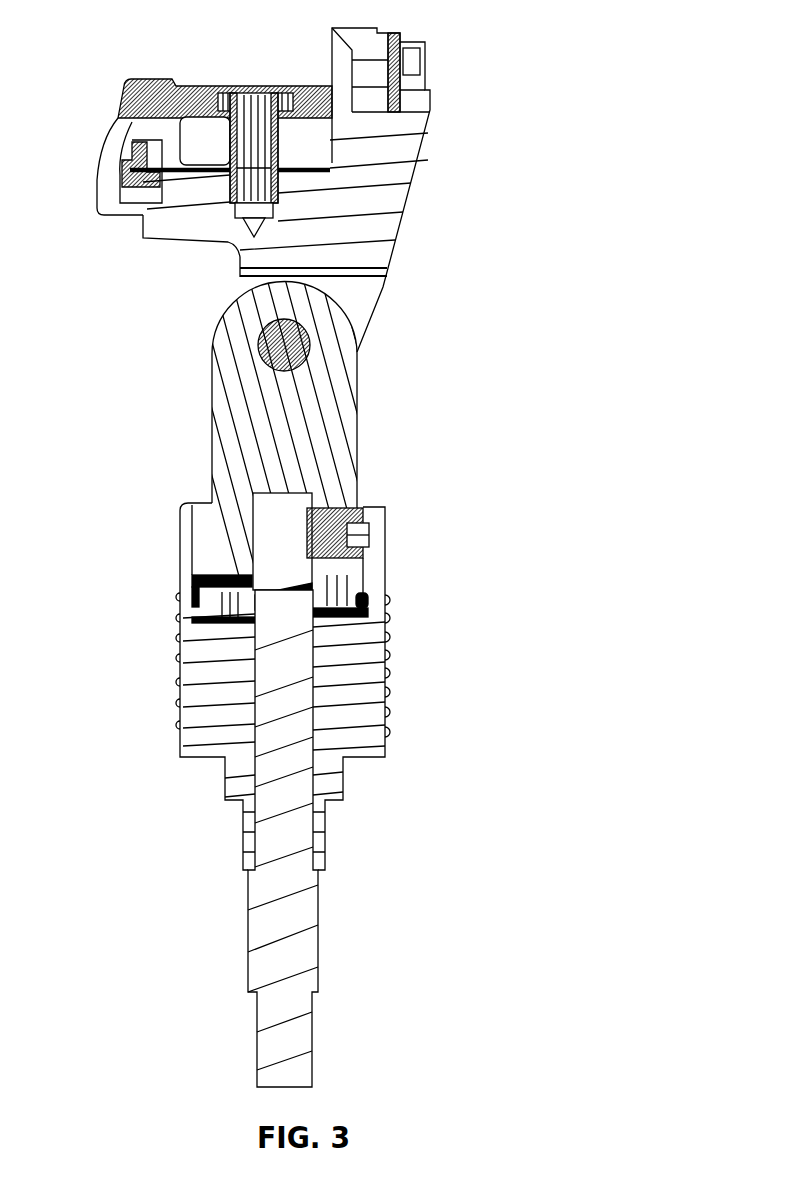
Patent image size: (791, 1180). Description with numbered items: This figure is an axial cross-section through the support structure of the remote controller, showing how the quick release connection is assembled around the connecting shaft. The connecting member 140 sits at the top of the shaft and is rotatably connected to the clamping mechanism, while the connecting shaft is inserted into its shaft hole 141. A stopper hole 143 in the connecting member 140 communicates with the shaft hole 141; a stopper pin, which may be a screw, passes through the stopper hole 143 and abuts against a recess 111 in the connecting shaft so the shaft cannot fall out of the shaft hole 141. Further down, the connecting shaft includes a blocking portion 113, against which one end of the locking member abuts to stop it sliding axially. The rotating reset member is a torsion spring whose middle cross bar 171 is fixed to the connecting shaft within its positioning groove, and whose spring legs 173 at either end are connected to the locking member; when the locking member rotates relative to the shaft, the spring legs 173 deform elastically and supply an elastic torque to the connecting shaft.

The connecting member 140 is at (257, 432).
The shaft hole 141 is at (313, 498).
The recess 111 is at (350, 503).
The stopper hole 143 is at (380, 507).
The spring legs 173 is at (180, 565).
The cross bar 171 is at (296, 601).
The blocking portion 113 is at (316, 903).